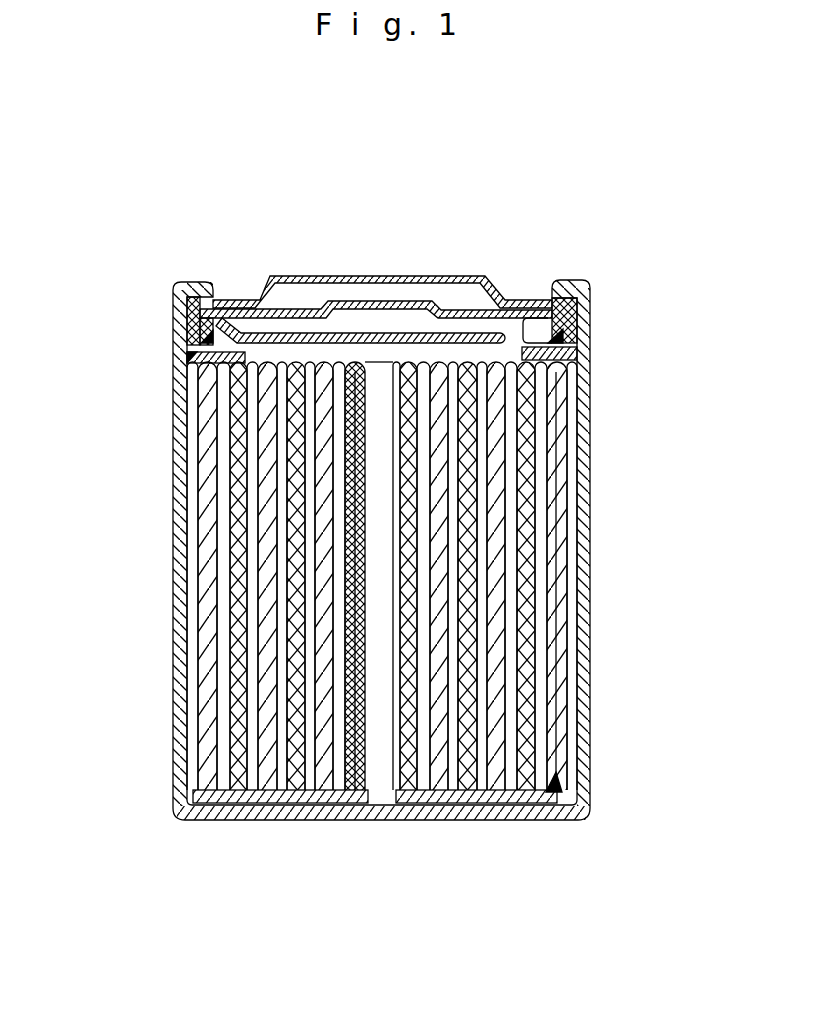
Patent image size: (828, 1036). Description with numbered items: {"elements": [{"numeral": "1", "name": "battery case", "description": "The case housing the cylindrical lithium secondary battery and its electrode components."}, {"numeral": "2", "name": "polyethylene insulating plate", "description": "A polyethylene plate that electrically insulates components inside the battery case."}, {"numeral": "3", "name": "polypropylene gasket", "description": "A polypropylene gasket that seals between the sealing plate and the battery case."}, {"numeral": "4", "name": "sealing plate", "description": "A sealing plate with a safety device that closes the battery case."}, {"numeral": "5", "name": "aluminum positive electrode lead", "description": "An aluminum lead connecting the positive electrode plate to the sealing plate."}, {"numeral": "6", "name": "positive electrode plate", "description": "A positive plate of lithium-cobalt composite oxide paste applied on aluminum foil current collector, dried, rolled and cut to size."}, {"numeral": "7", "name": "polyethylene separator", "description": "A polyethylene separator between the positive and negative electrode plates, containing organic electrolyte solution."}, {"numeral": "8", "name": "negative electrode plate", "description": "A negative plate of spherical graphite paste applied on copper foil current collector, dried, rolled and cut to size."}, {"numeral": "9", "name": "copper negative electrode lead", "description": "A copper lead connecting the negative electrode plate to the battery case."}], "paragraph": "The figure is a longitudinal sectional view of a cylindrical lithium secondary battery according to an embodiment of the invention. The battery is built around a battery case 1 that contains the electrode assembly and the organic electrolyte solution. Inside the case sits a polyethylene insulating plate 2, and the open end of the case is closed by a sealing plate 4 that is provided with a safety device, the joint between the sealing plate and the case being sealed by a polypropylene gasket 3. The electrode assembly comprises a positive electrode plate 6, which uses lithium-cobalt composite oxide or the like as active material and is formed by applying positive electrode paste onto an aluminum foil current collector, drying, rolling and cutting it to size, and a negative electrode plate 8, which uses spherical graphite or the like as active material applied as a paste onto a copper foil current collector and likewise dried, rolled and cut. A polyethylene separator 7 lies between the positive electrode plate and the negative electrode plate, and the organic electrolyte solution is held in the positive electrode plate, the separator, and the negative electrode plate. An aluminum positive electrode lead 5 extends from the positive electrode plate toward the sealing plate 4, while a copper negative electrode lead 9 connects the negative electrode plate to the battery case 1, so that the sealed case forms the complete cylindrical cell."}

The battery case 1 is at (175, 305).
The negative electrode lead 2 is at (177, 357).
The gasket 3 is at (213, 293).
The sealing cap 4 is at (370, 275).
The positive electrode lead 5 is at (497, 340).
The separator 6 is at (525, 402).
The positive electrode 7 is at (257, 772).
The weld 8 is at (560, 780).
The insulating plate 9 is at (532, 800).